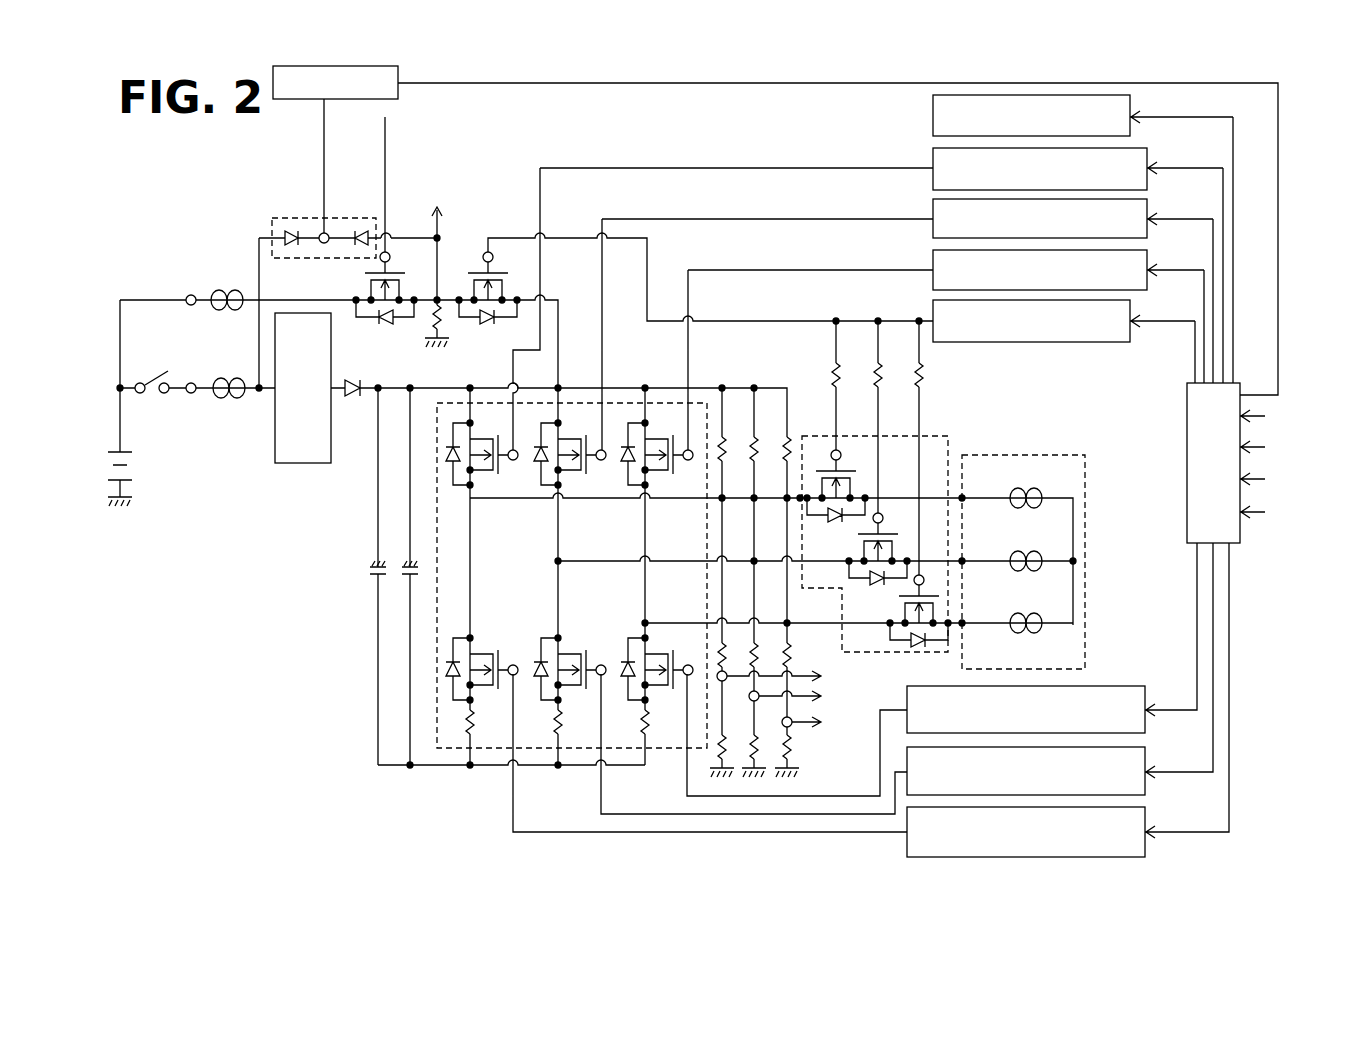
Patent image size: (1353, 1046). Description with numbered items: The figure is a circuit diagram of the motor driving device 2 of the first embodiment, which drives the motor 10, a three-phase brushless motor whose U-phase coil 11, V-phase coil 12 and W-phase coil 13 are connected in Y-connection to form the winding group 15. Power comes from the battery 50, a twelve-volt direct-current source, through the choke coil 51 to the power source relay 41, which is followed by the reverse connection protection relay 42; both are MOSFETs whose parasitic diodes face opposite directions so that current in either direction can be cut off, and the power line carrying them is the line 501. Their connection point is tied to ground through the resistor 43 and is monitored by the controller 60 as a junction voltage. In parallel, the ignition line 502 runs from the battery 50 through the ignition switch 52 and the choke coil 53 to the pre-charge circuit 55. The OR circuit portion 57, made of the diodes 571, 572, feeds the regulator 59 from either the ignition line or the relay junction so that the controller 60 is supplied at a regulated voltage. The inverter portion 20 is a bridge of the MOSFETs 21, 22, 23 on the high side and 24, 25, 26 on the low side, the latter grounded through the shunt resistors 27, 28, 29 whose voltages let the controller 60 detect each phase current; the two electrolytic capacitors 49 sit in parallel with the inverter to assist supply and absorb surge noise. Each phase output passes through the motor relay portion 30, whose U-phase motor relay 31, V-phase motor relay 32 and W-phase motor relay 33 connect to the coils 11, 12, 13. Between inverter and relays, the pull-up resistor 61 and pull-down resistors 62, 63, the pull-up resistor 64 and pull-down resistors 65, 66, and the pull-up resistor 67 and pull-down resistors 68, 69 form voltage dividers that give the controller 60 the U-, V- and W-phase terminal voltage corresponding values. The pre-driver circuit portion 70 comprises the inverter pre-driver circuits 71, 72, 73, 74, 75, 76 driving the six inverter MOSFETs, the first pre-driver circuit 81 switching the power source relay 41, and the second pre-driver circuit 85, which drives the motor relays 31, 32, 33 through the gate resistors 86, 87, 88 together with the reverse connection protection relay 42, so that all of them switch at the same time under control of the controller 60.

The motor driving device 2 is at (421, 818).
The motor 10 is at (1025, 529).
The U-phase coil 11 is at (1026, 489).
The V-phase coil 12 is at (1026, 552).
The W-phase coil 13 is at (1026, 614).
The winding group 15 is at (1088, 522).
The inverter portion 20 is at (572, 576).
The MOSFET 21 is at (473, 436).
The MOSFET 22 is at (561, 436).
The MOSFET 23 is at (648, 436).
The MOSFET 24 is at (474, 650).
The MOSFET 25 is at (562, 650).
The MOSFET 26 is at (649, 650).
The shunt resistor 27 is at (474, 711).
The shunt resistor 28 is at (562, 711).
The shunt resistor 29 is at (649, 711).
The motor relay portion 30 is at (909, 519).
The U-phase motor relay 31 is at (850, 487).
The V-phase motor relay 32 is at (890, 550).
The W-phase motor relay 33 is at (903, 612).
The power source relay 41 is at (368, 292).
The reverse connection protection relay 42 is at (504, 291).
The resistor 43 is at (430, 322).
The capacitors 49 is at (372, 564).
The battery 50 is at (133, 453).
The PIG line 501 is at (138, 297).
The IG line 502 is at (166, 381).
The choke coil 51 is at (230, 291).
The ignition switch 52 is at (166, 394).
The choke coil 53 is at (233, 399).
The pre-charge circuit 55 is at (303, 464).
The OR circuit portion 57 is at (342, 200).
The diode 571 is at (288, 231).
The diode 572 is at (361, 231).
The regulator 59 is at (288, 100).
The controller 60 is at (1241, 533).
The pull-up resistor 61 is at (742, 432).
The pull-down resistor 62 is at (740, 650).
The pull-down resistor 63 is at (725, 742).
The pull-up resistor 64 is at (774, 432).
The pull-down resistor 65 is at (773, 650).
The pull-down resistor 66 is at (757, 742).
The pull-up resistor 67 is at (788, 458).
The pull-down resistor 68 is at (790, 660).
The pull-down resistor 69 is at (793, 750).
The pre-driver circuit portion 70 is at (886, 474).
The U-phase high-potential-side inverter pre-driver circuit 71 is at (1148, 160).
The V-phase high-potential-side inverter pre-driver circuit 72 is at (1148, 210).
The W-phase high-potential-side inverter pre-driver circuit 73 is at (1148, 262).
The W-phase low-potential-side inverter pre-driver circuit 74 is at (1147, 697).
The V-phase low-potential-side inverter pre-driver circuit 75 is at (1147, 758).
The U-phase low-potential-side inverter pre-driver circuit 76 is at (1147, 818).
The first pre-driver circuit 81 is at (1133, 103).
The second pre-driver circuit 85 is at (1131, 333).
The gate resistor 86 is at (830, 377).
The gate resistor 87 is at (872, 377).
The gate resistor 88 is at (913, 377).